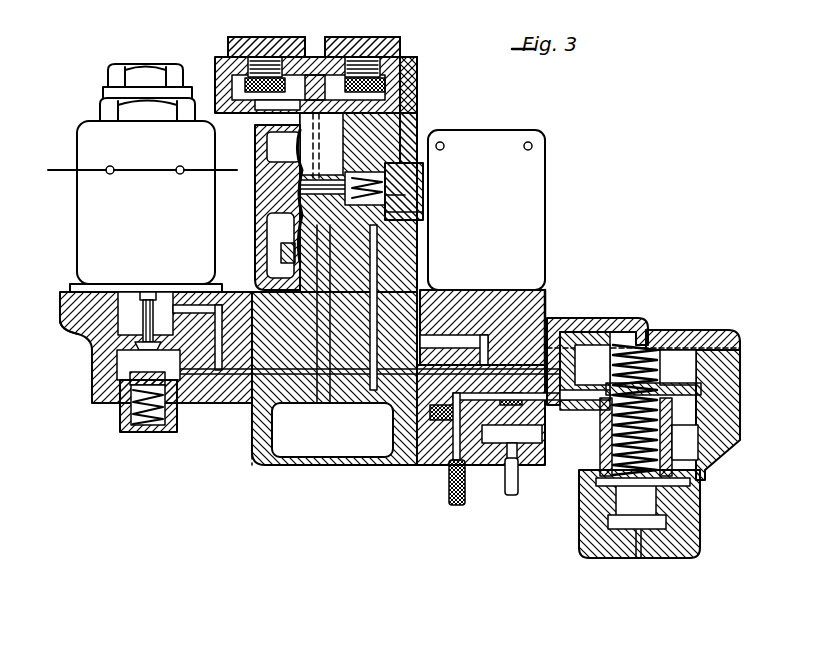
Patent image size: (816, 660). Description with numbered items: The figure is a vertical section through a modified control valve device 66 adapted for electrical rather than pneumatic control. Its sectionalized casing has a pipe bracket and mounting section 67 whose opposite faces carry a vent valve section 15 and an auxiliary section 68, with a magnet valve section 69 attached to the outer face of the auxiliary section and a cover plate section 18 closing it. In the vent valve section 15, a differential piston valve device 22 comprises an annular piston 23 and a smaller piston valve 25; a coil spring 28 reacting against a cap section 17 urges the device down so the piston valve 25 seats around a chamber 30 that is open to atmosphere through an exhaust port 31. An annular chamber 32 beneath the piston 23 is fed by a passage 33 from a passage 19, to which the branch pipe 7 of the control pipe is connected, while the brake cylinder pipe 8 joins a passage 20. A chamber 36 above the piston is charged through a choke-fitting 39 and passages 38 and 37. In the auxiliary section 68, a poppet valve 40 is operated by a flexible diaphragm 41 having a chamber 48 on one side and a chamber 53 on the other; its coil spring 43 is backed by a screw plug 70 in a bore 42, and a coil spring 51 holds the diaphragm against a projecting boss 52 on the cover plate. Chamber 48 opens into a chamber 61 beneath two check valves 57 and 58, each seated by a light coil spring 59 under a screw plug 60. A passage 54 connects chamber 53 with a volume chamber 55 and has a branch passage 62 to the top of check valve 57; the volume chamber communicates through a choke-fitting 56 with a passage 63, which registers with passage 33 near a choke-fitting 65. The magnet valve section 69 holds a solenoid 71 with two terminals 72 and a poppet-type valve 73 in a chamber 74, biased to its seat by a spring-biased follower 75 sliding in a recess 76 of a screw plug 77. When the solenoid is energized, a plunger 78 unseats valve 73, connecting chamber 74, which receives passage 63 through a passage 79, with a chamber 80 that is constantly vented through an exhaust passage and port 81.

The branch pipe 7 is at (460, 505).
The brake cylinder pipe 8 is at (518, 490).
The vent valve section 15 is at (716, 396).
The cap section 17 is at (713, 330).
The cover plate section 18 is at (262, 263).
The passage 19 is at (437, 467).
The passage 20 is at (442, 338).
The differential piston valve device 22 is at (674, 445).
The annular piston 23 is at (691, 387).
The piston valve 25 is at (607, 490).
The coil spring 28 is at (651, 335).
The chamber 30 is at (616, 525).
The exhaust port 31 is at (638, 556).
The annular chamber 32 is at (672, 430).
The passage 33 is at (465, 413).
The chamber 36 is at (690, 357).
The passage 37 is at (373, 236).
The branch passage 38 is at (550, 395).
The choke-fitting 39 is at (545, 400).
The poppet valve 40 is at (400, 195).
The flexible diaphragm 41 is at (290, 172).
The bore 42 is at (423, 172).
The coil spring 43 is at (420, 212).
The chamber 48 is at (280, 152).
The coil spring 51 is at (333, 178).
The projecting boss 52 is at (268, 222).
The chamber 53 is at (280, 245).
The passage 54 is at (320, 400).
The volume chamber 55 is at (285, 448).
The choke-fitting 56 is at (393, 420).
The check valve 57 is at (217, 60).
The check valve 58 is at (396, 78).
The coil spring 59 is at (358, 50).
The screw plug 60 is at (372, 45).
The chamber 61 is at (265, 104).
The branch passage 62 is at (318, 140).
The passage 63 is at (360, 397).
The choke-fitting 65 is at (438, 467).
The control valve device 66 is at (254, 469).
The pipe bracket and mounting section 67 is at (530, 306).
The auxiliary section 68 is at (412, 105).
The magnet valve section 69 is at (120, 308).
The screw plug 70 is at (415, 186).
The solenoid 71 is at (87, 212).
The terminals 72 is at (177, 167).
The valve 73 is at (135, 345).
The chamber 74 is at (118, 372).
The seat 75 is at (137, 372).
The recess 76 is at (175, 420).
The screw plug 77 is at (145, 432).
The plunger 78 is at (147, 298).
The passage 79 is at (240, 372).
The chamber 80 is at (92, 323).
The exhaust passage and port 81 is at (218, 374).